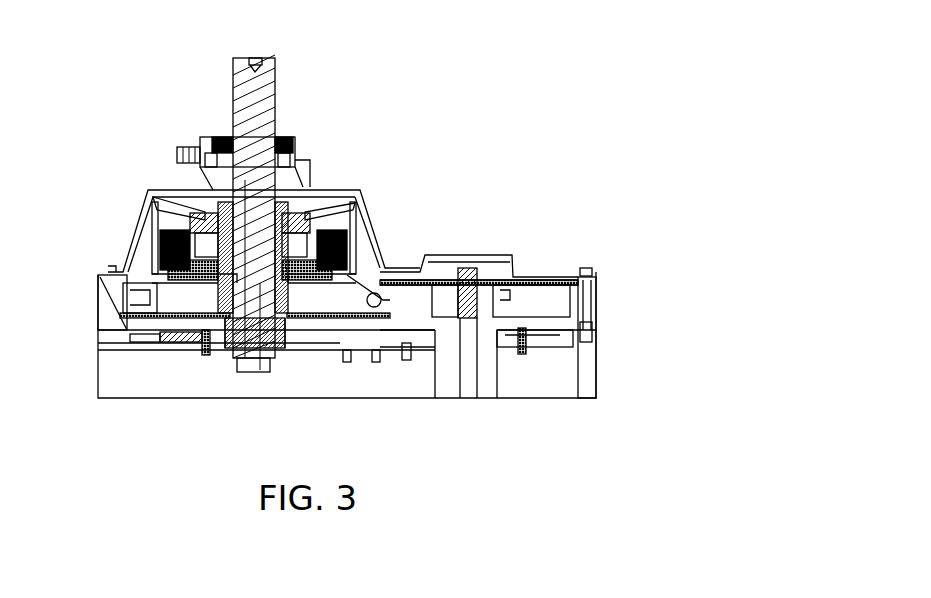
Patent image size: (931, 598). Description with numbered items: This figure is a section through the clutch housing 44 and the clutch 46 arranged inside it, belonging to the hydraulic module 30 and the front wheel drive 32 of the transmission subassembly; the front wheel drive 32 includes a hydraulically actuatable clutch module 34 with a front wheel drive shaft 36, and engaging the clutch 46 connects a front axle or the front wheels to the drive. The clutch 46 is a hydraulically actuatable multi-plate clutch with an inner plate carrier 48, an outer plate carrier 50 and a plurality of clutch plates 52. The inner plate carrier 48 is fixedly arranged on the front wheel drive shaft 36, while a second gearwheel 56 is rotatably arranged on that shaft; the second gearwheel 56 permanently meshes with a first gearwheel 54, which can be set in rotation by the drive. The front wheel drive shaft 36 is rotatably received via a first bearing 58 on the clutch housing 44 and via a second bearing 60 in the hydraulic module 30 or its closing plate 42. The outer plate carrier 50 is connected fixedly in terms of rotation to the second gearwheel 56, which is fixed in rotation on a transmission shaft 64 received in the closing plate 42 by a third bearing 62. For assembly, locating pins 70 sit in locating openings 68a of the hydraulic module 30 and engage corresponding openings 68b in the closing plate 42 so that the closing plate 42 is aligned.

The hydraulic module 30 is at (317, 382).
The front wheel drive 32 is at (505, 207).
The clutch module 34 is at (397, 177).
The front wheel drive shaft 36 is at (232, 67).
The closing plate 42 is at (590, 335).
The clutch housing 44 is at (148, 190).
The clutch 46 is at (165, 232).
The inner plate carrier 48 is at (310, 200).
The outer plate carrier 50 is at (380, 270).
The clutch plates 52 is at (358, 242).
The first gearwheel 54 is at (540, 303).
The second gearwheel 56 is at (133, 323).
The first bearing 58 is at (205, 122).
The second bearing 60 is at (282, 363).
The third bearing 62 is at (423, 357).
The transmission shaft 64 is at (448, 380).
The locating openings 68a is at (192, 363).
The openings 68b is at (195, 340).
The locating pins 70 is at (208, 340).